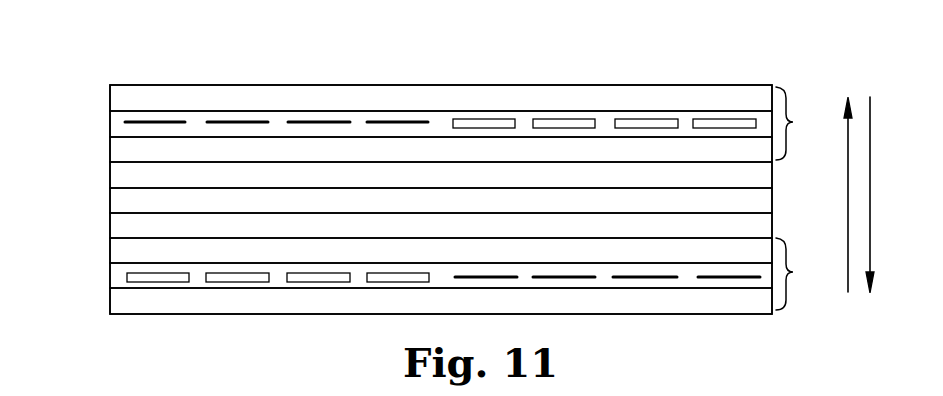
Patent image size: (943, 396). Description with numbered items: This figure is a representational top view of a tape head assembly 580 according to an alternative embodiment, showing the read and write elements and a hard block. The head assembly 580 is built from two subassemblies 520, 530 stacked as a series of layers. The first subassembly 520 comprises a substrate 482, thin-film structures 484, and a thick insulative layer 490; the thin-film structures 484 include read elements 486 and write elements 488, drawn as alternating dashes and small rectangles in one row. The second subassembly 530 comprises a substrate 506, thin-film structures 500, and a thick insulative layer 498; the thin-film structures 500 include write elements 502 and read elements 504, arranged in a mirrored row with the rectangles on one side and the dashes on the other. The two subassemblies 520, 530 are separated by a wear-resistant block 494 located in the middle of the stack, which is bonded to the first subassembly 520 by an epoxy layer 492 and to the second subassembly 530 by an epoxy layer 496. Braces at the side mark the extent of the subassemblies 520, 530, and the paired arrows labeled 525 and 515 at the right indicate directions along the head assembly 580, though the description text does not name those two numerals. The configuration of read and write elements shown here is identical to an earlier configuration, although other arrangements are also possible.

The substrate 482 is at (127, 98).
The thin-film structures 484 is at (118, 120).
The read elements 486 is at (233, 120).
The write elements 488 is at (622, 121).
The thick insulative layer 490 is at (127, 149).
The epoxy layer 492 is at (126, 180).
The wear-resistant block 494 is at (148, 207).
The epoxy layer 496 is at (122, 227).
The thick insulative layer 498 is at (127, 254).
The thin-film structures 500 is at (120, 277).
The write elements 502 is at (167, 278).
The read elements 504 is at (650, 278).
The substrate 506 is at (130, 300).
The subassembly 520 is at (807, 123).
The subassembly 530 is at (805, 274).
The direction 525 is at (868, 115).
The direction 515 is at (848, 272).
The head assembly 580 is at (413, 65).